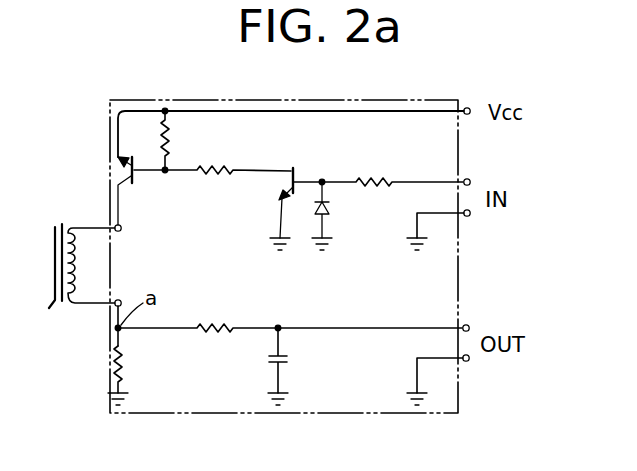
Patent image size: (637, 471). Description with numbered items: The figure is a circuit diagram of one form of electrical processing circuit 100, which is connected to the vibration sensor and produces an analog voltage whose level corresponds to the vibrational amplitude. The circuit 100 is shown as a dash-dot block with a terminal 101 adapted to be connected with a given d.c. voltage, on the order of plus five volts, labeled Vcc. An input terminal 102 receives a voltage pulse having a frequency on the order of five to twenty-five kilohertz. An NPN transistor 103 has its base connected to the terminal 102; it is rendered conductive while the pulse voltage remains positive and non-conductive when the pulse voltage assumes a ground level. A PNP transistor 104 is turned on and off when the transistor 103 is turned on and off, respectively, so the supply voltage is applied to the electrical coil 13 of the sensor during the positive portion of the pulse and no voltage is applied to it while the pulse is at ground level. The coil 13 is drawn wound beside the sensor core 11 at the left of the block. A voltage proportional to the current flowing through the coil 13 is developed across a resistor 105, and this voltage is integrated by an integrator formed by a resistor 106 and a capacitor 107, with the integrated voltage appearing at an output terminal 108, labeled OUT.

The electrical processing circuit 100 is at (127, 98).
The terminal 101 is at (470, 104).
The input terminal 102 is at (470, 176).
The NPN transistor 103 is at (296, 171).
The PNP transistor 104 is at (136, 178).
The resistor 105 is at (122, 361).
The resistor 106 is at (208, 320).
The capacitor 107 is at (290, 362).
The output terminal 108 is at (469, 323).
The transformer core 11 is at (54, 229).
The electrical coil 13 is at (77, 229).